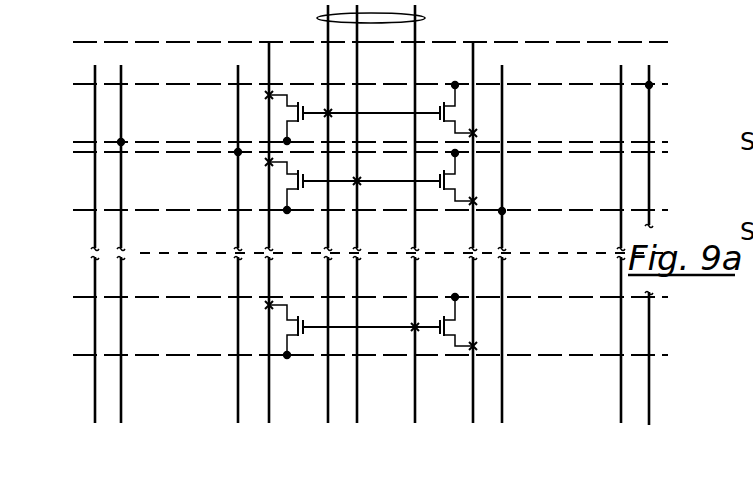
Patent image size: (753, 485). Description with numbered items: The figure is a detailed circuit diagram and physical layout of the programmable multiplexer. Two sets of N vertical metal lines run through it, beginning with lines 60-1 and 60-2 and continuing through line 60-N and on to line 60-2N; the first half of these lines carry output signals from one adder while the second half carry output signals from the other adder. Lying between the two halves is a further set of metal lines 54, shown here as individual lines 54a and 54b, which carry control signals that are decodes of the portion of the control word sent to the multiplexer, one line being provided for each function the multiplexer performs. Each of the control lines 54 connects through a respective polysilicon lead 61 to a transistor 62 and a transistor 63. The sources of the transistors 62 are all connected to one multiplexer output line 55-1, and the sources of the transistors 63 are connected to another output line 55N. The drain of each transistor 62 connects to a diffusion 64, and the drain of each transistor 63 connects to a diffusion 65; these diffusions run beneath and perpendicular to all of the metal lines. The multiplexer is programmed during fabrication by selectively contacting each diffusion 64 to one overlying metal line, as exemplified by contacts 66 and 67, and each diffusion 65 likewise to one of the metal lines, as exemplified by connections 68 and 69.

The metal lines 54 is at (425, 18).
The bus line 54a is at (324, 70).
The bus line 54b is at (360, 70).
The output line 55-1 is at (206, 43).
The output line 55N is at (582, 43).
The metal line 60-1 is at (95, 403).
The metal line 60-2 is at (150, 396).
The metal line 60-N is at (238, 410).
The metal line 60-2N is at (677, 397).
The polysilicon leads 61 is at (386, 120).
The transistor 62 is at (294, 115).
The transistor 63 is at (446, 115).
The diffusion 64 is at (174, 142).
The diffusion 65 is at (591, 85).
The contact 66 is at (123, 140).
The contact 67 is at (504, 213).
The contact 68 is at (651, 84).
The contact 69 is at (236, 153).